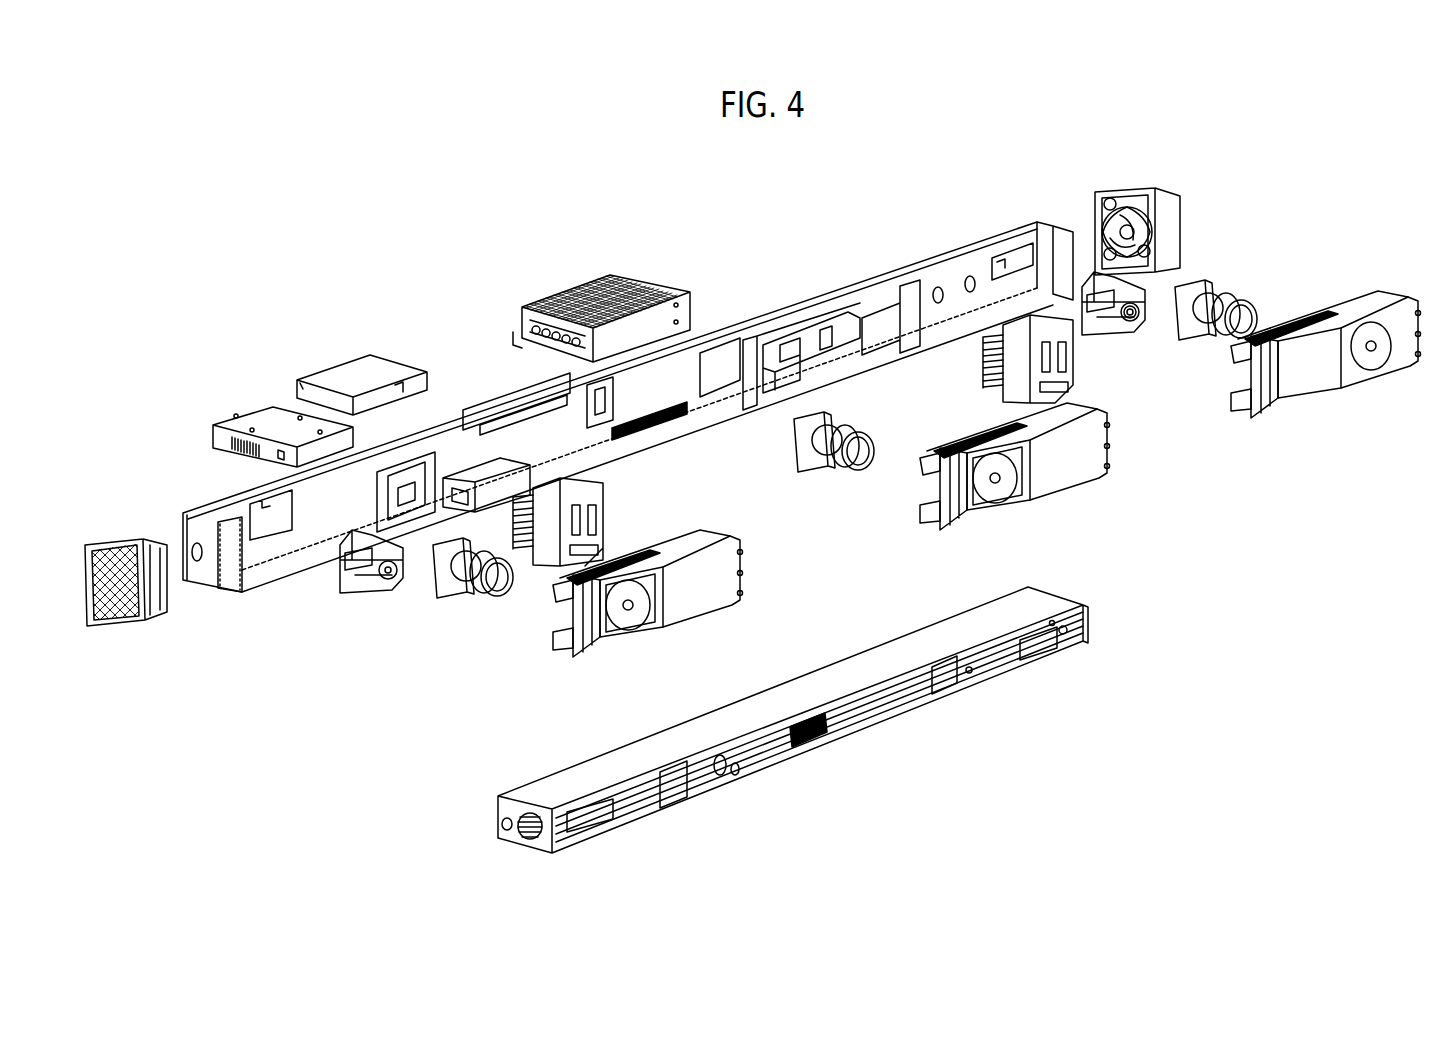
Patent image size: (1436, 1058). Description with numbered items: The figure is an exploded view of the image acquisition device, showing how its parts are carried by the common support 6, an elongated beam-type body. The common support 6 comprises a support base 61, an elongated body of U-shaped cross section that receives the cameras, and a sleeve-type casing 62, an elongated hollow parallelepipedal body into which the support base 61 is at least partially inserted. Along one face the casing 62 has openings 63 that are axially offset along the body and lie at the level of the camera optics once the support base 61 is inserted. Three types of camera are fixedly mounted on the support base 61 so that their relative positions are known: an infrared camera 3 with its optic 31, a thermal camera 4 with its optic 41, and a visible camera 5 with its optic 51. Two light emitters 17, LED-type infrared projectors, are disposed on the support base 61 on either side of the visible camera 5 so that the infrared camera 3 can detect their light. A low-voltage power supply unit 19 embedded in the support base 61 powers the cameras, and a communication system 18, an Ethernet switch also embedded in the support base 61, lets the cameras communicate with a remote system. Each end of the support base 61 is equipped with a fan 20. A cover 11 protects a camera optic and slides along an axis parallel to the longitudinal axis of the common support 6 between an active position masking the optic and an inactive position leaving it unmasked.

The common support 6 is at (857, 255).
The support base 61 is at (740, 320).
The sleeve-type casing 62 is at (1040, 608).
The openings 63 is at (607, 833).
The cover 11 is at (690, 588).
The light emitters 17 is at (612, 515).
The communication system 18 is at (232, 410).
The low-voltage power supply unit 19 is at (593, 276).
The fan 20 is at (125, 533).
The infrared camera 3 is at (450, 600).
The optic of the infrared camera 31 is at (1255, 300).
The thermal camera 4 is at (360, 582).
The optic of the thermal camera 41 is at (1138, 327).
The visible camera 5 is at (800, 468).
The optic of the visible camera 51 is at (850, 472).